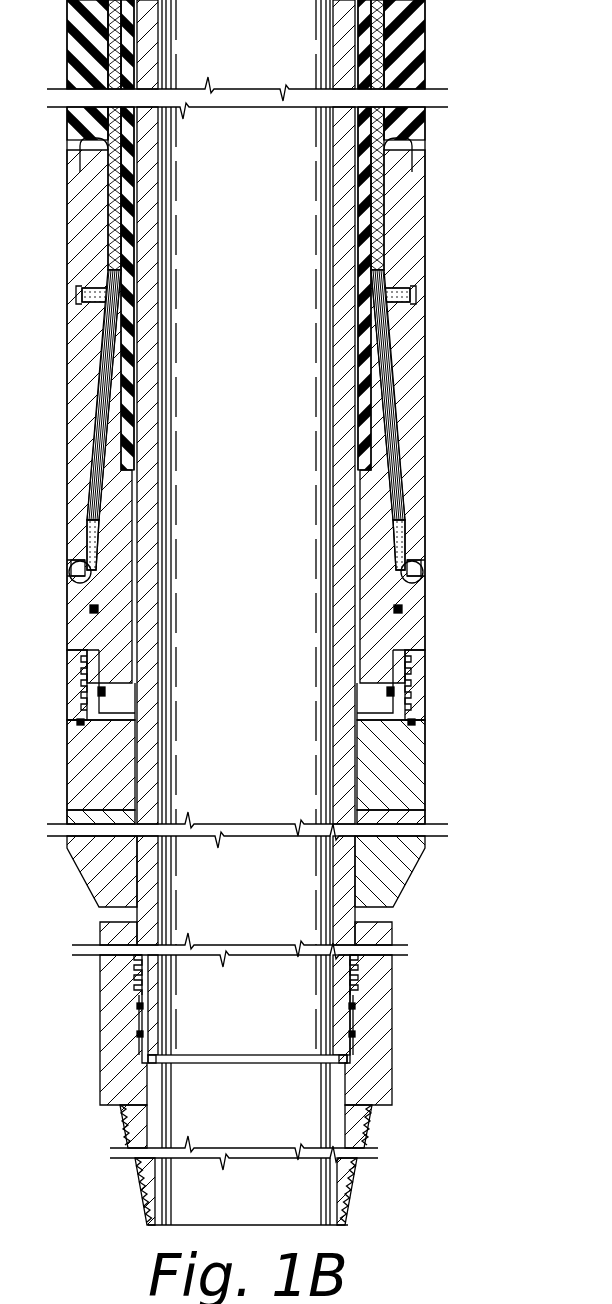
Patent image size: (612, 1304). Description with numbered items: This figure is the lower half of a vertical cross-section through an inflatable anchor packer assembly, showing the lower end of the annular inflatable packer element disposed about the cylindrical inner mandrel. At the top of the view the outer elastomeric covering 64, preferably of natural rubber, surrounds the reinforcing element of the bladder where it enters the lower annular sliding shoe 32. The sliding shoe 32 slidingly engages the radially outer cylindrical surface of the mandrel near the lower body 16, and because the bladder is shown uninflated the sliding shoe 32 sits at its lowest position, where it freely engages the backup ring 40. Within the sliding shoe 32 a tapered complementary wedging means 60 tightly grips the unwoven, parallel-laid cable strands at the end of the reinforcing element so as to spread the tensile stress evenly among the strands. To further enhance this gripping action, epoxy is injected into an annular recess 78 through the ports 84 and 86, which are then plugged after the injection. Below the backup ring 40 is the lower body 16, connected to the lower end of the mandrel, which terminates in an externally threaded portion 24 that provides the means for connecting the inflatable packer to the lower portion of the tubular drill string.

The lower body 16 is at (398, 1040).
The externally threaded portion 24 is at (375, 1125).
The sliding shoe 32 is at (430, 752).
The backup ring 40 is at (400, 858).
The wedging means 60 is at (405, 418).
The outer elastomeric covering 64 is at (415, 46).
The annular recess 78 is at (403, 536).
The port 84 is at (398, 293).
The port 86 is at (403, 568).